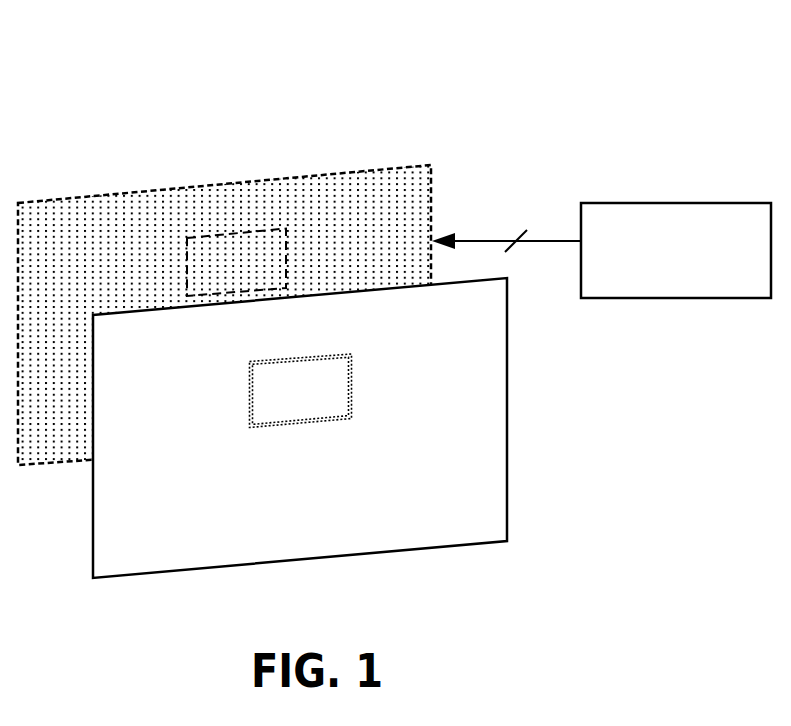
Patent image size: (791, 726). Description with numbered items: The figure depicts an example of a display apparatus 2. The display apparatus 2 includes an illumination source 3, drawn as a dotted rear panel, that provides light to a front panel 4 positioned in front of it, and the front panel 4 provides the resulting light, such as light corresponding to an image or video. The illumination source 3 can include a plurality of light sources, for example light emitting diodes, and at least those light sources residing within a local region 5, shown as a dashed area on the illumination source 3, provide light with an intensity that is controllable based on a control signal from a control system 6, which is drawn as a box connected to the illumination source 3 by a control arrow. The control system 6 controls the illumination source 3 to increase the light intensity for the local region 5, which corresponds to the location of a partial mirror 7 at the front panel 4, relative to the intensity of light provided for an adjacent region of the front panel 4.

The display apparatus 2 is at (593, 58).
The illumination source 3 is at (253, 181).
The front panel 4 is at (507, 380).
The local region 5 is at (187, 262).
The control system 6 is at (677, 203).
The partial mirror 7 is at (352, 380).